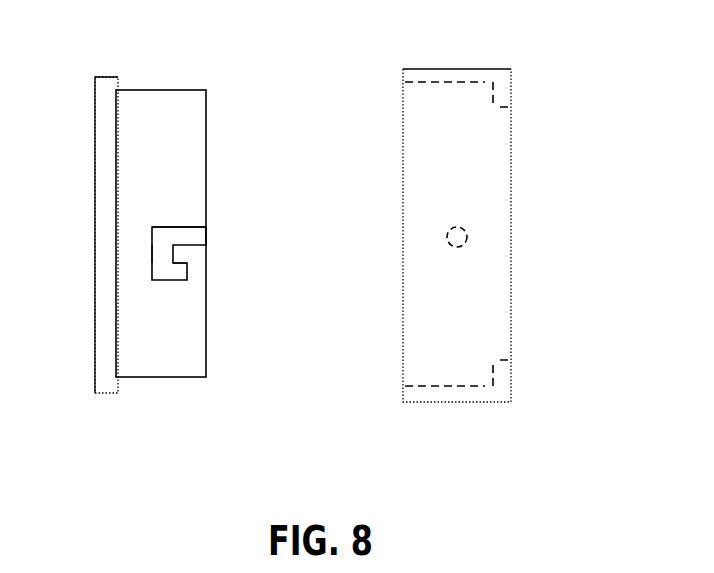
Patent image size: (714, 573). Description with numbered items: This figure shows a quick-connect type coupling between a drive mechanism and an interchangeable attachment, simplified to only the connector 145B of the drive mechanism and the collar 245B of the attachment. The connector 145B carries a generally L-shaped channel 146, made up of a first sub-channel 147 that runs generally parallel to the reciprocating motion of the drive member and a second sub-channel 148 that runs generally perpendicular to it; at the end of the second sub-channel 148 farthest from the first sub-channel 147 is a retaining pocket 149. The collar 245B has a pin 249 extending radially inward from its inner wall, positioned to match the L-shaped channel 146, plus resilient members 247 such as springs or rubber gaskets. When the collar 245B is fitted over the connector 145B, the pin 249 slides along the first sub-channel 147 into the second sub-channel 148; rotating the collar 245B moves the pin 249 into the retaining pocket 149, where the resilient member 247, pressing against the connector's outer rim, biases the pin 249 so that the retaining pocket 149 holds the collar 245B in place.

The connector 145B is at (146, 90).
The L-shaped channel 146 is at (178, 227).
The first sub-channel 147 is at (197, 237).
The second sub-channel 148 is at (162, 257).
The retaining pocket 149 is at (180, 272).
The collar 245B is at (417, 67).
The resilient member 247 is at (485, 99).
The pin 249 is at (467, 242).